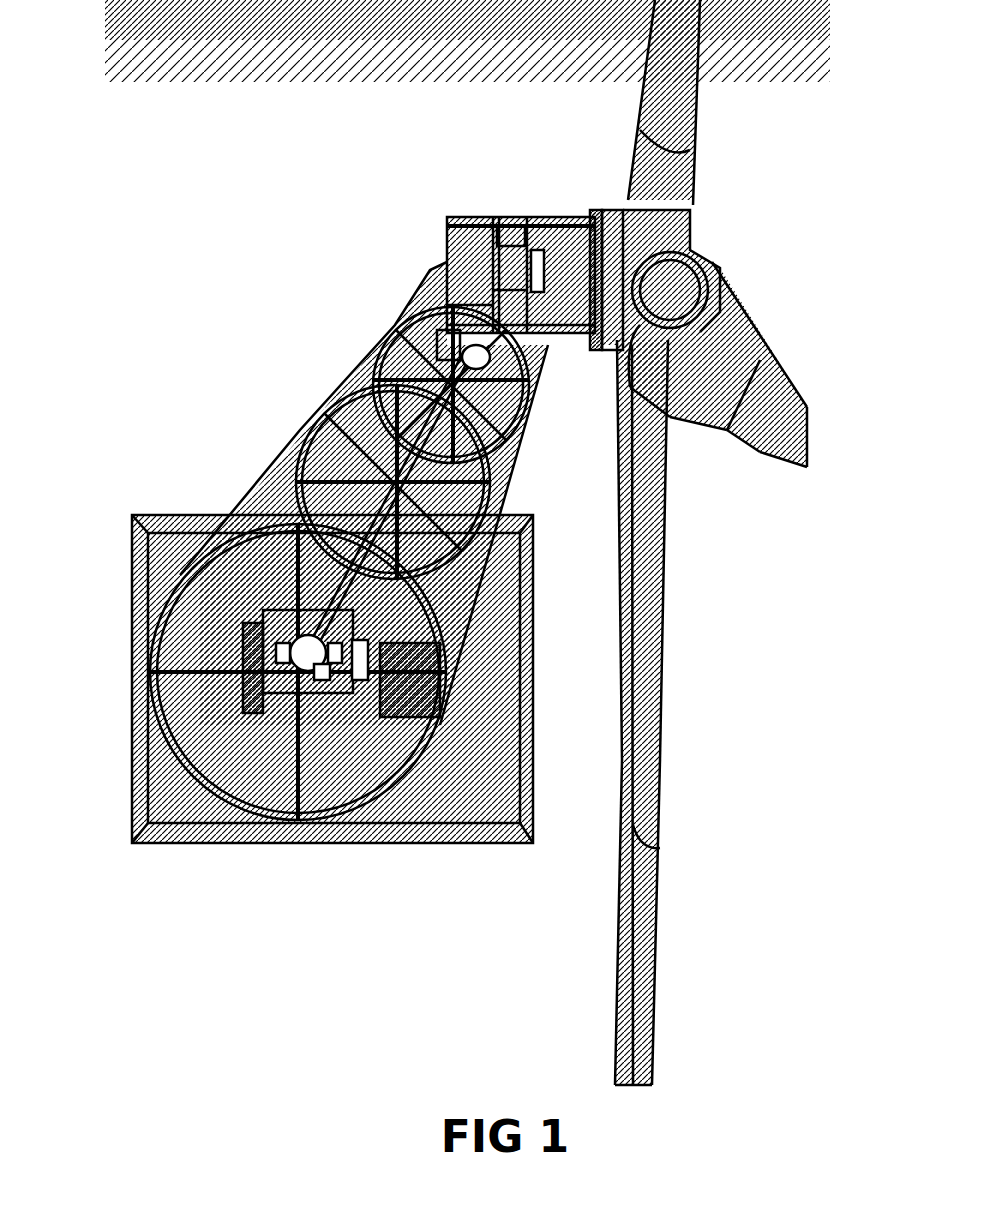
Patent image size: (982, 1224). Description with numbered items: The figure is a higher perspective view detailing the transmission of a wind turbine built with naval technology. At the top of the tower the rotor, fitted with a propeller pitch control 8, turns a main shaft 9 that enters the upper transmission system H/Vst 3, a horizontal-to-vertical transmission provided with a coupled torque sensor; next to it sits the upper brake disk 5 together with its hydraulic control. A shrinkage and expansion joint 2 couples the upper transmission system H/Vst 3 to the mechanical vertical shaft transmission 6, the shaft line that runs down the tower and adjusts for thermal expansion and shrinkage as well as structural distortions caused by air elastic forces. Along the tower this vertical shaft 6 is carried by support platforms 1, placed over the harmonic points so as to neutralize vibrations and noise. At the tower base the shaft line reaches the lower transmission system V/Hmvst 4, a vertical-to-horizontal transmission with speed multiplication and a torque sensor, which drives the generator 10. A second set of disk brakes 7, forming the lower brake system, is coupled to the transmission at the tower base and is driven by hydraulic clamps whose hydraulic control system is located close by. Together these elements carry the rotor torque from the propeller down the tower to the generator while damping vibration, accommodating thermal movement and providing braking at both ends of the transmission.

The support platforms 1 is at (327, 557).
The shrinkage and expansion joint 2 is at (447, 345).
The upper transmission system H/Vst 3 is at (467, 273).
The lower transmission system V/Hmvst 4 is at (247, 668).
The upper brake disk 5 is at (553, 263).
The mechanical vertical shaft transmission 6 is at (423, 467).
The second set of disk brakes 7 is at (323, 673).
The propeller pitch control 8 is at (682, 254).
The main shaft 9 is at (575, 278).
The generator 10 is at (455, 683).